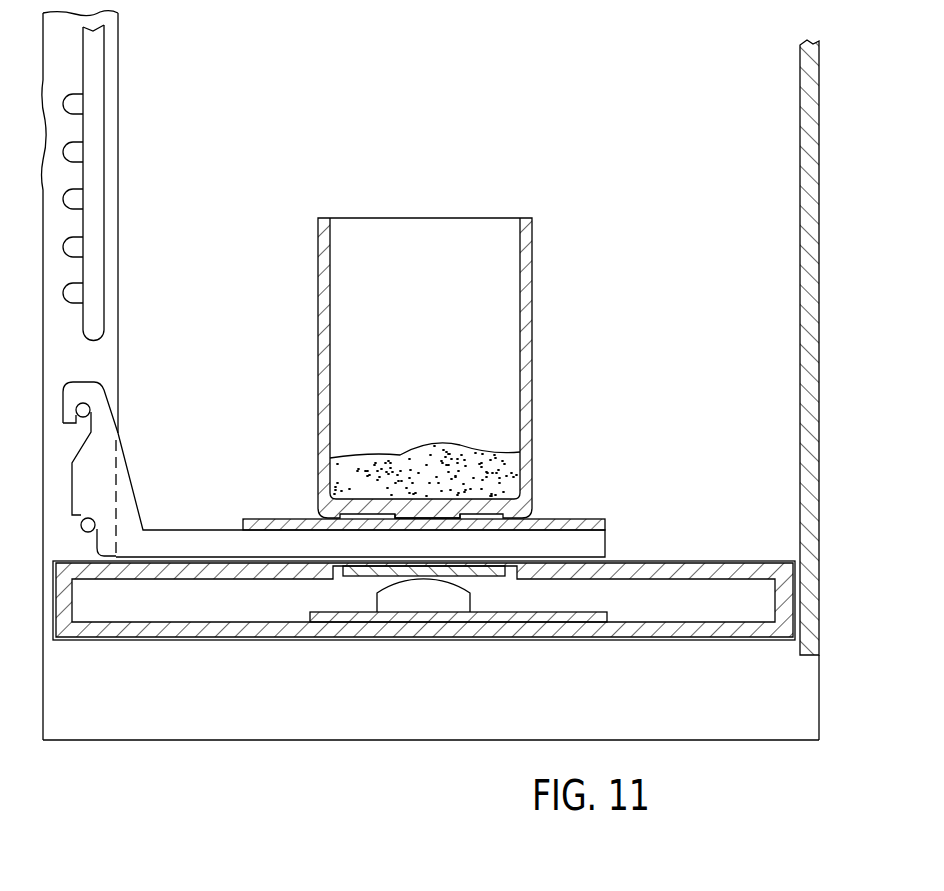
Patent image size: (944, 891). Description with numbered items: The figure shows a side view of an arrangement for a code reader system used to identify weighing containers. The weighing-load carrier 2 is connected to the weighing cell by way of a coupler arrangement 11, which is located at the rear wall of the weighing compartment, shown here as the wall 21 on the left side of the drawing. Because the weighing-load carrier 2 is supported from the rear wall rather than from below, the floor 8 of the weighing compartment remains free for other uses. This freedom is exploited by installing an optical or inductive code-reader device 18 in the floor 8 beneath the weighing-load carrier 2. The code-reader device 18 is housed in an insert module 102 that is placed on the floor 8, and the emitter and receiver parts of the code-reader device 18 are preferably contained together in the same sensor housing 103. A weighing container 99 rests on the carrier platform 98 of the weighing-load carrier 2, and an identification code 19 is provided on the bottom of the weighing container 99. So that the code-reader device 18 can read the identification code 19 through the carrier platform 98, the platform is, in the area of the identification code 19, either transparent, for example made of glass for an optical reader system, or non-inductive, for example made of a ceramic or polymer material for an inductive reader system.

The weighing-load carrier 2 is at (150, 519).
The floor 8 is at (705, 642).
The coupler arrangement 11 is at (107, 380).
The code-reader device 18 is at (412, 626).
The identification code 19 is at (419, 516).
The side wall with slot 21 is at (124, 132).
The carrier platform 98 is at (561, 521).
The weighing container 99 is at (534, 259).
The insert module 102 is at (684, 601).
The sensor housing 103 is at (440, 604).